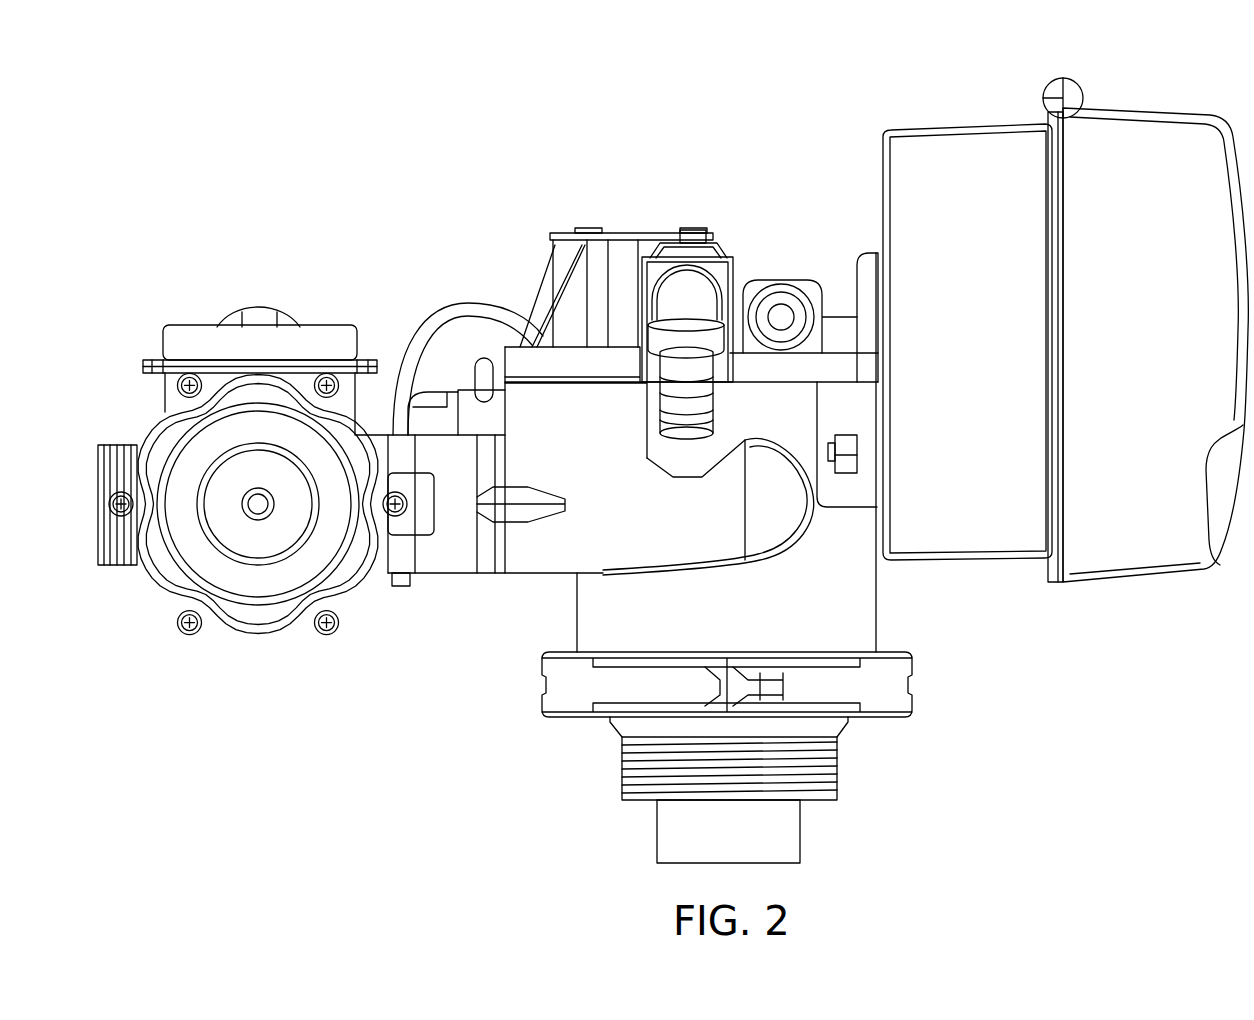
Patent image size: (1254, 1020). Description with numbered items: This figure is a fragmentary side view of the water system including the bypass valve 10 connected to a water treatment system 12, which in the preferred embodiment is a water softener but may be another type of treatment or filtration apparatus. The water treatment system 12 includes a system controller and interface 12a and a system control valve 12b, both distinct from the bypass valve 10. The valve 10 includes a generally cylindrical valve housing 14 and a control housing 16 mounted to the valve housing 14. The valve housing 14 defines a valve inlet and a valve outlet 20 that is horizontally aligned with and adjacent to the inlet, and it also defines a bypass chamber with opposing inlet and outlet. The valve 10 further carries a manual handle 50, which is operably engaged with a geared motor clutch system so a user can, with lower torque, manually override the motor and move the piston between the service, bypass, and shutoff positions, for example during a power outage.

The valve 10 is at (232, 288).
The water treatment system 12 is at (778, 256).
The system controller and interface 12a is at (965, 128).
The system control valve 12b is at (645, 233).
The valve housing 14 is at (163, 407).
The control housing 16 is at (313, 347).
The valve outlet 20 is at (100, 514).
The manual handle 50 is at (300, 597).